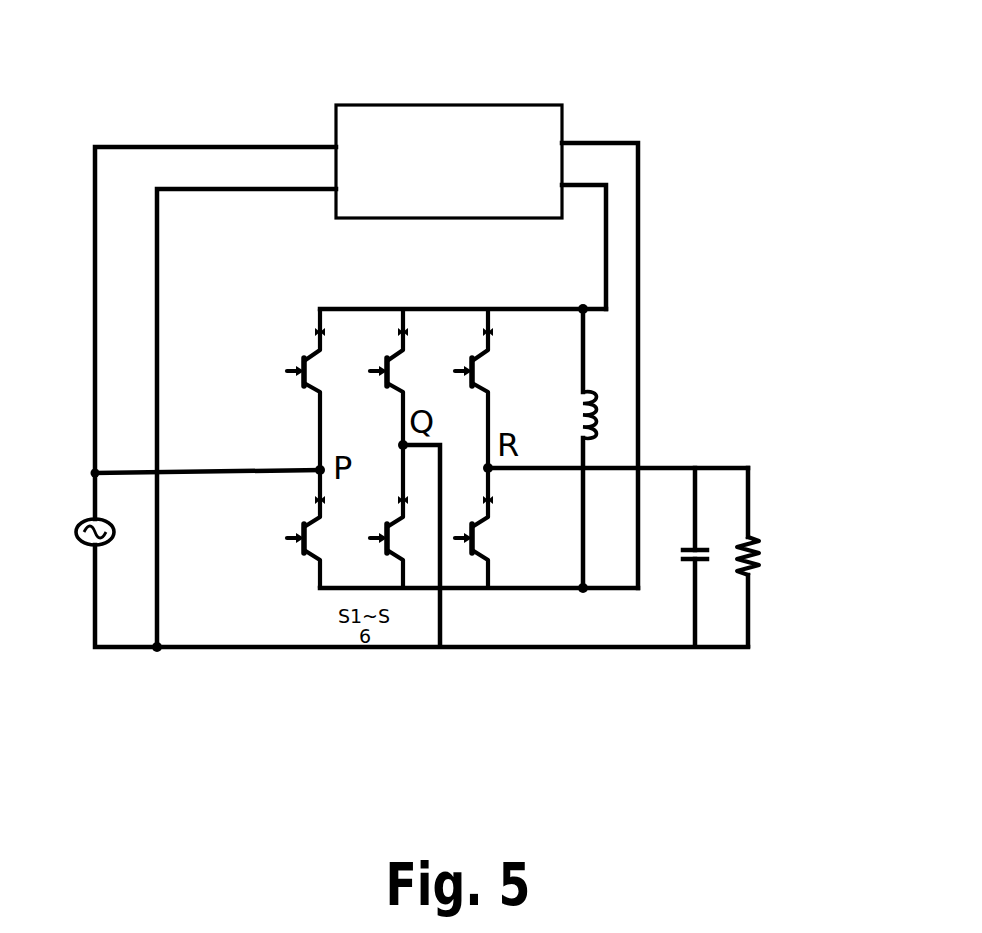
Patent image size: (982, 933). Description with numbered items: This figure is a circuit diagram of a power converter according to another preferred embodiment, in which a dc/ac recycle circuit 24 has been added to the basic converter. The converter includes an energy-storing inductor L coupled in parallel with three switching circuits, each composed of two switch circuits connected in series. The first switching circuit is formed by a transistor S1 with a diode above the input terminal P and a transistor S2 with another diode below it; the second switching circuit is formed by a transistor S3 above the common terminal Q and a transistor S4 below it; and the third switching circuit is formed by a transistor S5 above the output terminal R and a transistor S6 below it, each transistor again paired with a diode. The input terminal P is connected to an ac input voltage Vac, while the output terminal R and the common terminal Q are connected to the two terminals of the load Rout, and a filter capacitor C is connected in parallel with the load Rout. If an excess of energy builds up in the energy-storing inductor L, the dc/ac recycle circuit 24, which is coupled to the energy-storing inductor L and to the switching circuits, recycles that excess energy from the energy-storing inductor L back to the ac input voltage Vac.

The dc/ac recycle circuit 24 is at (473, 105).
The transistor S1 is at (304, 389).
The transistor S2 is at (302, 529).
The transistor S3 is at (387, 377).
The transistor S4 is at (385, 516).
The transistor S5 is at (472, 388).
The transistor S6 is at (470, 528).
The energy-storing inductor L is at (598, 448).
The filter capacitor C is at (685, 557).
The load Rout is at (784, 557).
The ac input voltage Vac is at (74, 534).